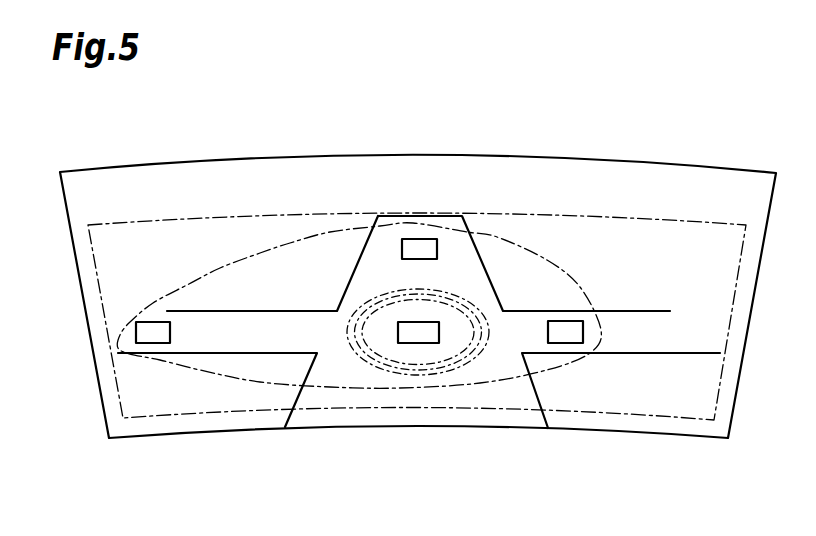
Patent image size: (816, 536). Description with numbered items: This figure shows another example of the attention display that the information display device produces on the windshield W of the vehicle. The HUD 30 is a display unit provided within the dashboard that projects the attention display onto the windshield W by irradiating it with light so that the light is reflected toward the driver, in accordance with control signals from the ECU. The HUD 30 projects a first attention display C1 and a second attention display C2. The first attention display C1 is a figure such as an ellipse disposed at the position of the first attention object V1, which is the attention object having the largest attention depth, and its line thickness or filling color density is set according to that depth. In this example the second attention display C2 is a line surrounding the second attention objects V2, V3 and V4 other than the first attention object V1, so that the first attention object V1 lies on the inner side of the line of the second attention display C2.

The windshield W is at (115, 165).
The HUD 30 is at (624, 413).
The first attention object V1 is at (410, 335).
The second attention object V2 is at (152, 332).
The second attention object V3 is at (430, 250).
The second attention object V4 is at (565, 333).
The first attention display C1 is at (470, 357).
The second attention display C2 is at (335, 388).